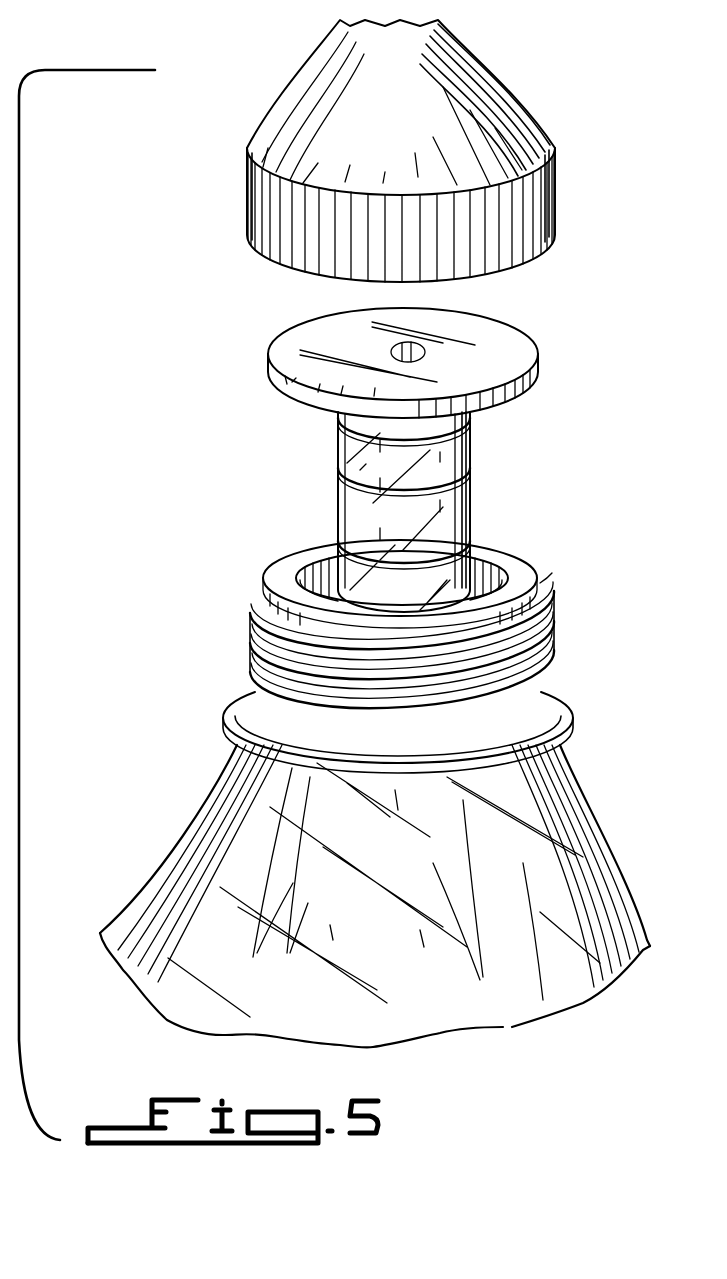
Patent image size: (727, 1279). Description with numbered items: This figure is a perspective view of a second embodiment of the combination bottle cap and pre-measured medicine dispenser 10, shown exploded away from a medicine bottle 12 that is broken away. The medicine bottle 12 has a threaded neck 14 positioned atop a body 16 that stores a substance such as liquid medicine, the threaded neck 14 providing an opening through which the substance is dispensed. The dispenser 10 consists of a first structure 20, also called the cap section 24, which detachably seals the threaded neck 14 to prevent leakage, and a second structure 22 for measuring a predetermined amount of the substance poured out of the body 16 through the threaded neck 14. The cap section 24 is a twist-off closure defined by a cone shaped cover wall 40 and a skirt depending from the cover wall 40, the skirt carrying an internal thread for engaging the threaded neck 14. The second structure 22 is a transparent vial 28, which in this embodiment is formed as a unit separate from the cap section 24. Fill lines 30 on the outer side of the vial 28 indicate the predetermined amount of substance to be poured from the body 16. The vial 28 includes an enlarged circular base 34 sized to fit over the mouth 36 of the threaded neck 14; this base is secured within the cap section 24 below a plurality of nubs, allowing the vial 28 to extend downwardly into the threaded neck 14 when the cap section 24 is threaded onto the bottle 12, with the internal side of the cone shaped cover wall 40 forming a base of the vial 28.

The combination bottle cap and pre-measured medicine dispenser 10 is at (574, 92).
The medicine bottle 12 is at (181, 844).
The threaded neck 14 is at (258, 655).
The body 16 is at (450, 1017).
The first structure 20 is at (247, 190).
The second structure 22 is at (336, 511).
The cap section 24 is at (540, 200).
The transparent vial 28 is at (461, 512).
The fill lines 30 is at (338, 478).
The enlarged circular base 34 is at (292, 349).
The mouth 36 is at (320, 560).
The cone shaped cover wall 40 is at (462, 58).